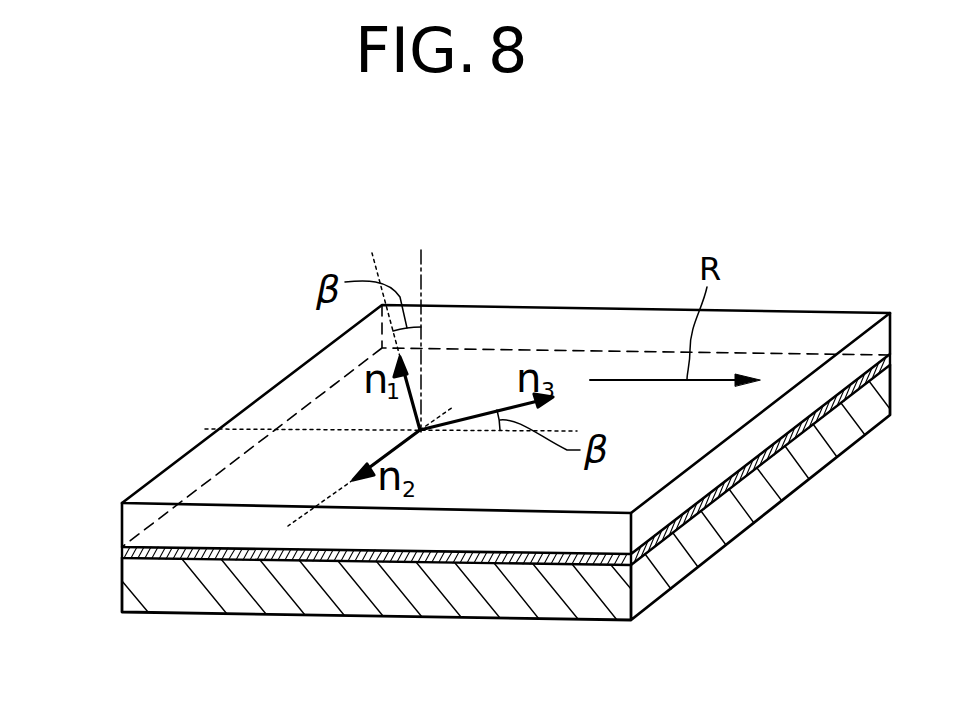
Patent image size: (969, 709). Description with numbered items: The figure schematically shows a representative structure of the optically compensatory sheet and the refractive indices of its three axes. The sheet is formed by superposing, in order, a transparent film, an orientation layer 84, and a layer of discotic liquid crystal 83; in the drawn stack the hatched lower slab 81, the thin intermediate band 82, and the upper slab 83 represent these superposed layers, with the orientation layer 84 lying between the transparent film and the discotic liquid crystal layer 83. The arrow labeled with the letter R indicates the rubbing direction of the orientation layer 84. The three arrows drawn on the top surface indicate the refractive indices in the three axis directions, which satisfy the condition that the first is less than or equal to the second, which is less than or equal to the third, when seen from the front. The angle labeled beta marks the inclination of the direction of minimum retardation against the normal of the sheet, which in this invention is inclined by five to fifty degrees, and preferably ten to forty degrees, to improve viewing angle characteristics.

The substrate layer 81 is at (121, 579).
The intermediate thin layer 82 is at (121, 553).
The layer of discotic liquid crystal 83 is at (121, 523).
The orientation layer 84 is at (422, 254).